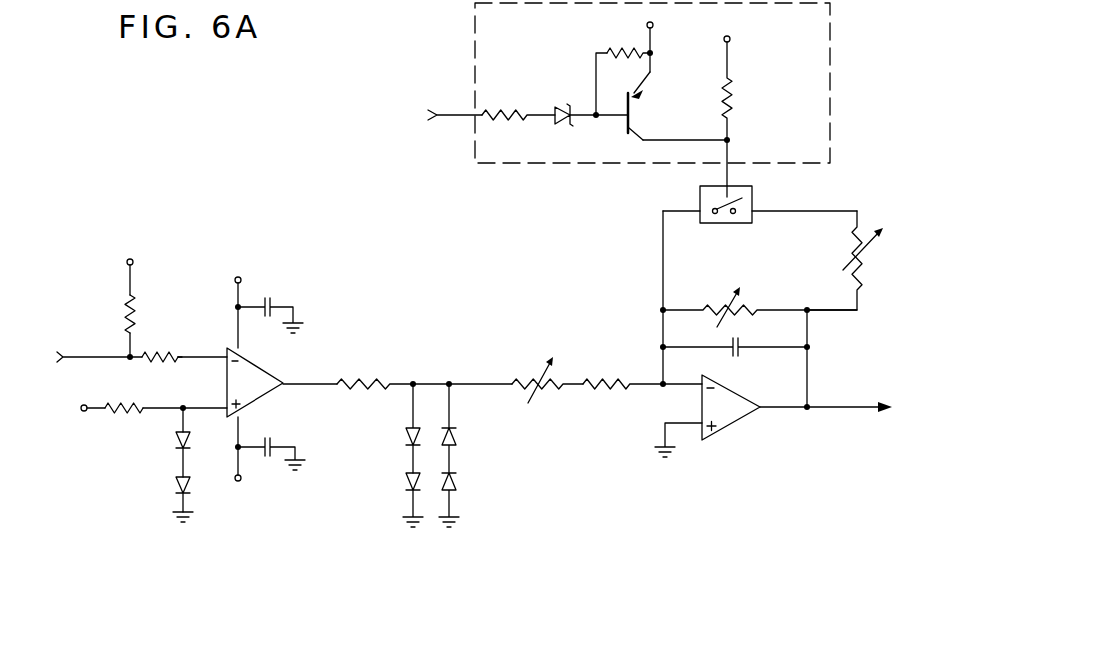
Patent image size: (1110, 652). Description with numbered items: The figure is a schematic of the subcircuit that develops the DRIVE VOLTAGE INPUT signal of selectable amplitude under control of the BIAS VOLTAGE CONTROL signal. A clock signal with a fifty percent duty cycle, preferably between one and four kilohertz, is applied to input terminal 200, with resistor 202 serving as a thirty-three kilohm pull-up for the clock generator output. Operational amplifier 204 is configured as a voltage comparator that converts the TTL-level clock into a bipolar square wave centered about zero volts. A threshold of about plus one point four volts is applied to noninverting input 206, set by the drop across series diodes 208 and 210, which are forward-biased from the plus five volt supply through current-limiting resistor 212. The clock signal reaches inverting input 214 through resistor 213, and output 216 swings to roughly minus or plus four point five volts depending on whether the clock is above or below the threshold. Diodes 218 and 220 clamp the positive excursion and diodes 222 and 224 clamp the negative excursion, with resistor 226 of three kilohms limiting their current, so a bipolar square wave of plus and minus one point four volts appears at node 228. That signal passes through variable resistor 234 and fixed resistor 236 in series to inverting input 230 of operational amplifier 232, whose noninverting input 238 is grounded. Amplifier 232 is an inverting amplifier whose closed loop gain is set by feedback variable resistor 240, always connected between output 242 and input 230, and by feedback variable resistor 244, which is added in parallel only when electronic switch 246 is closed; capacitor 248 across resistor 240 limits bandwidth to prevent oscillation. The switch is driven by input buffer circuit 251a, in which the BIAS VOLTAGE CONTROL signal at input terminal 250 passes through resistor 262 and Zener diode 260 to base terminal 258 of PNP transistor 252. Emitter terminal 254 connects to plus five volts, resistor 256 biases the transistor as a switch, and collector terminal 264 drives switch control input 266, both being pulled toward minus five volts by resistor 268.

The input terminal 200 is at (97, 362).
The resistor 202 is at (125, 303).
The operational amplifier 204 is at (264, 365).
The noninverting input 206 is at (199, 406).
The diode 208 is at (192, 440).
The diode 210 is at (174, 479).
The resistor 212 is at (125, 416).
The resistor 213 is at (160, 361).
The inverting input 214 is at (197, 356).
The output 216 is at (321, 378).
The diode 218 is at (405, 438).
The diode 220 is at (405, 484).
The diode 222 is at (460, 434).
The diode 224 is at (460, 482).
The resistor 226 is at (380, 376).
The node 228 is at (446, 378).
The inverting input 230 is at (675, 382).
The operational amplifier 232 is at (733, 393).
The variable resistor 234 is at (523, 375).
The fixed resistor 236 is at (618, 377).
The noninverting input 238 is at (684, 434).
The feedback variable resistor 240 is at (757, 302).
The output 242 is at (825, 406).
The feedback variable resistor 244 is at (878, 232).
The electronic switch 246 is at (757, 196).
The capacitor 248 is at (747, 345).
The input terminal 250 is at (453, 113).
The input buffer circuit 251a is at (831, 100).
The PNP transistor 252 is at (636, 108).
The emitter terminal 254 is at (652, 72).
The resistor 256 is at (607, 50).
The base terminal 258 is at (604, 120).
The Zener diode 260 is at (553, 105).
The resistor 262 is at (530, 107).
The collector terminal 264 is at (683, 139).
The switch control input 266 is at (725, 172).
The resistor 268 is at (737, 88).